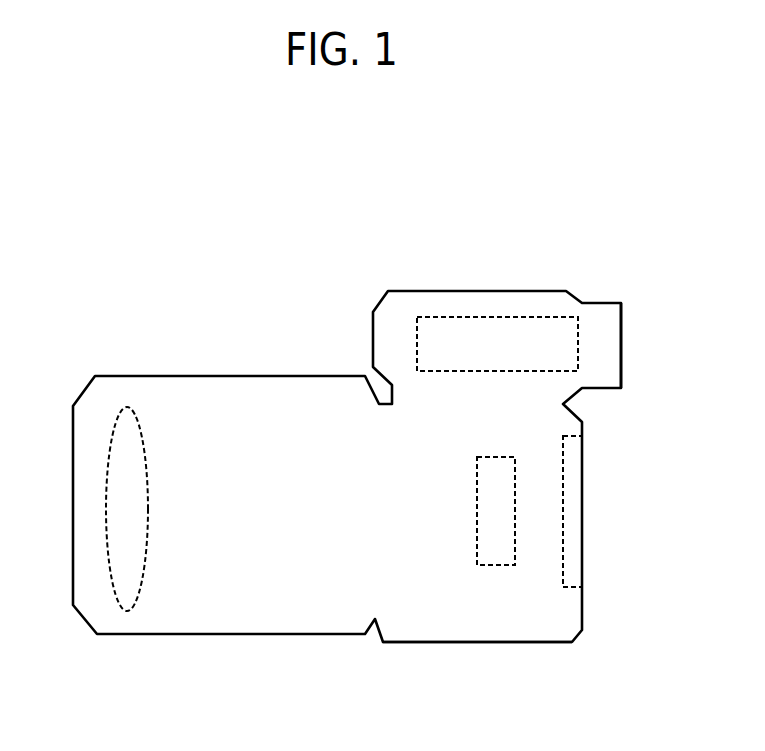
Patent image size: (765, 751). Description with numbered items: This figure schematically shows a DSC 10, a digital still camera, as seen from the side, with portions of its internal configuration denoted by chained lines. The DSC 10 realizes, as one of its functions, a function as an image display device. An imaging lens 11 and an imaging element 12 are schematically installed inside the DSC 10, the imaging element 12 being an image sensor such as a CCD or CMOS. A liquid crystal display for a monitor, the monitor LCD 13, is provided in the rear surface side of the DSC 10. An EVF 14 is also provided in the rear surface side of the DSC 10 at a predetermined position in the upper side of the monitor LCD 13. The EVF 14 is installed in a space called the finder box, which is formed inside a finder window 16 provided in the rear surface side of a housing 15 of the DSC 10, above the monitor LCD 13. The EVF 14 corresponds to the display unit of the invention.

The DSC 10 is at (413, 215).
The imaging lens 11 is at (128, 612).
The imaging element 12 is at (493, 565).
The monitor LCD 13 is at (575, 533).
The EVF 14 is at (518, 318).
The housing 15 is at (548, 643).
The finder window 16 is at (621, 350).